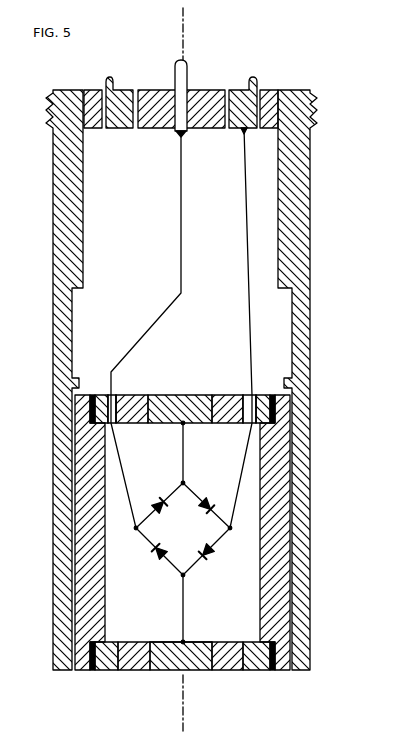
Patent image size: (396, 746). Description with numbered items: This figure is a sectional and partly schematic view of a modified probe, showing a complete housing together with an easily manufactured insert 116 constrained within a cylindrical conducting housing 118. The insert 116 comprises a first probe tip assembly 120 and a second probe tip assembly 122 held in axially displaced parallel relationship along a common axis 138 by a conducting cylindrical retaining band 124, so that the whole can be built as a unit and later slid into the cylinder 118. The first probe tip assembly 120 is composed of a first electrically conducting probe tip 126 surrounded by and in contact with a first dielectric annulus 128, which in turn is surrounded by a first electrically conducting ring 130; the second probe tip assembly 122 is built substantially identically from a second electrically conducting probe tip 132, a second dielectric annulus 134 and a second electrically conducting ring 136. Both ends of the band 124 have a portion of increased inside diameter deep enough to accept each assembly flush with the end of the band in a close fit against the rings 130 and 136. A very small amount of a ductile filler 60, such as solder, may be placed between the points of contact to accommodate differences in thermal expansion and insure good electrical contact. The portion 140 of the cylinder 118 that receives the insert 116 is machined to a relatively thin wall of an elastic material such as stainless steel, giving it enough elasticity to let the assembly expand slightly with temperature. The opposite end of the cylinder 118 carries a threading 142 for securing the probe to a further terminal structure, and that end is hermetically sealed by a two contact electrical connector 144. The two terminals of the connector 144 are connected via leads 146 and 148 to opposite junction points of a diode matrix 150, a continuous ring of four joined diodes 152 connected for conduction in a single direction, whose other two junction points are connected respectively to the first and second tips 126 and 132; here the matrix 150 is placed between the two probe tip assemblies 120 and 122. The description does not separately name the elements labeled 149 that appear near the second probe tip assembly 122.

The filler 60 is at (286, 636).
The probe insert 116 is at (184, 655).
The cylindrical conducting housing 118 is at (300, 207).
The first probe tip assembly 120 is at (174, 640).
The second probe tip assembly 122 is at (187, 401).
The conducting cylindrical retaining band 124 is at (287, 505).
The first electrically conducting probe tip 126 is at (196, 641).
The first dielectric annulus 128 is at (131, 668).
The first electrically conducting ring 130 is at (108, 665).
The second electrically conducting probe tip 132 is at (184, 393).
The second dielectric annulus 134 is at (136, 398).
The second electrically conducting ring 136 is at (266, 393).
The common axis 138 is at (185, 21).
The thin wall portion of the cylinder 140 is at (300, 523).
The threading 142 is at (313, 106).
The two contact electrical connector 144 is at (214, 78).
The lead 146 is at (181, 198).
The lead 148 is at (244, 173).
The feedthrough terminals 149 is at (112, 392).
The diode matrix 150 is at (175, 532).
The diodes 152 is at (206, 550).